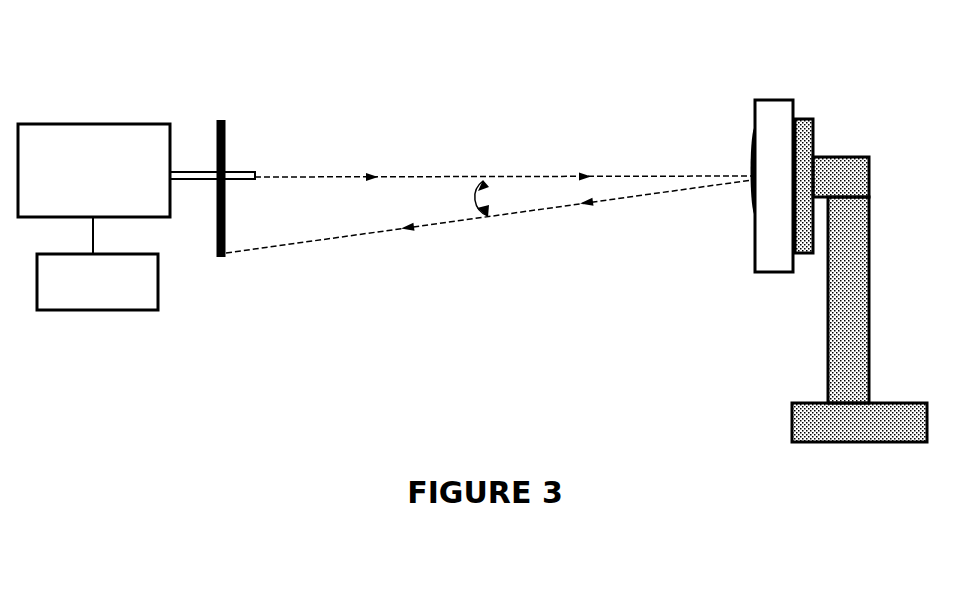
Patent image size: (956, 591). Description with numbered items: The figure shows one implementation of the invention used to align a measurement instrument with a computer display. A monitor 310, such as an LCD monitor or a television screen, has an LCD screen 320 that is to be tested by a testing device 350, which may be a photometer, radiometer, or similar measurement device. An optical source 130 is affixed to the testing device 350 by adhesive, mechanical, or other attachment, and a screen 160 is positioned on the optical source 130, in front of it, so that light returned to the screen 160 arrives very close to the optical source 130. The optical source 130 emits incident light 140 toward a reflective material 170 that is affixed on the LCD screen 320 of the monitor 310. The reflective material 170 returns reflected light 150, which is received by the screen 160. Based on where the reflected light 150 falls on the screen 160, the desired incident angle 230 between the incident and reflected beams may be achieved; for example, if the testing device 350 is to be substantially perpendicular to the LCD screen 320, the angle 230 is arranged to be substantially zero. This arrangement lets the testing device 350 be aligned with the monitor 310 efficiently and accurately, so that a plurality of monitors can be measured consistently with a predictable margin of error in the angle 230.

The optical source 130 is at (113, 122).
The incident light 140 is at (317, 177).
The reflected light 150 is at (348, 238).
The screen 160 is at (215, 130).
The reflective material 170 is at (753, 138).
The incident angle 230 is at (472, 198).
The monitor 310 is at (747, 461).
The LCD screen 320 is at (755, 233).
The testing device 350 is at (110, 312).